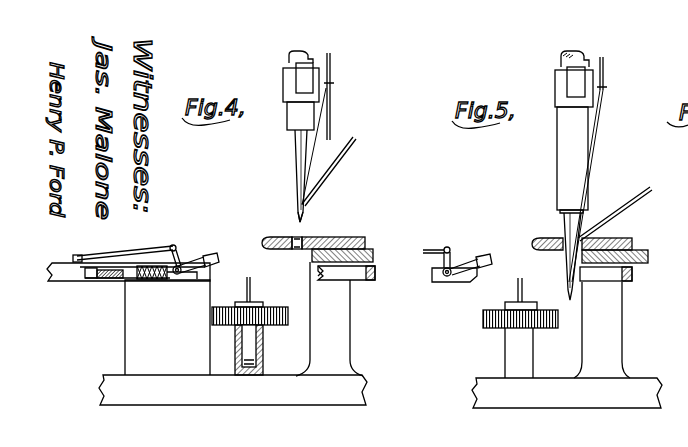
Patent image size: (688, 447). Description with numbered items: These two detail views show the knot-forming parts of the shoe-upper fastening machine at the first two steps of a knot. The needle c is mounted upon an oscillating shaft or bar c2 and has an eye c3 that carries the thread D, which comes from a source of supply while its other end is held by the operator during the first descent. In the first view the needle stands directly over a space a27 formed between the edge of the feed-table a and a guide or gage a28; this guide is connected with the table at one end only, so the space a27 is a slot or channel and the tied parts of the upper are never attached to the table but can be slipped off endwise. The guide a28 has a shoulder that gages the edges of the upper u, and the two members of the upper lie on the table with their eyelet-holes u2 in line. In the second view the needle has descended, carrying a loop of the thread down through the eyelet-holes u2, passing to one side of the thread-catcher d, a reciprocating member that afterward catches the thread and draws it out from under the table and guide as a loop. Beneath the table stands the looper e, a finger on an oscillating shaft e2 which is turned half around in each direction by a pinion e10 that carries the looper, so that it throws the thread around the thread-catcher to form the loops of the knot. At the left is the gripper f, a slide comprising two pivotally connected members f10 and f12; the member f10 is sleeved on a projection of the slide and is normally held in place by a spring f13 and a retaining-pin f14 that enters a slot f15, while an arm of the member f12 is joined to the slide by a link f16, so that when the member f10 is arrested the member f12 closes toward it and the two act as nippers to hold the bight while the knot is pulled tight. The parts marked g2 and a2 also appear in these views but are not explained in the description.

In FIG. 4, the oscillating shaft or bar c2 is at (288, 61).
In FIG. 5, the oscillating shaft or bar c2 is at (567, 145).
In FIG. 4, the needle bar clamp g2 is at (283, 100).
In FIG. 5, the needle bar clamp g2 is at (593, 98).
In FIG. 4, the needle c is at (297, 165).
In FIG. 5, the needle c is at (566, 259).
In FIG. 4, the eye c3 is at (299, 208).
In FIG. 4, the thread D is at (321, 127).
In FIG. 5, the thread D is at (588, 169).
In FIG. 4, the eyelet-holes u2 is at (313, 231).
In FIG. 5, the eyelet-holes u2 is at (615, 214).
In FIG. 4, the upper u is at (357, 237).
In FIG. 5, the upper u is at (620, 240).
In FIG. 4, the feed-table a is at (371, 253).
In FIG. 5, the feed-table a is at (649, 256).
In FIG. 4, the guide or gage a28 is at (266, 242).
In FIG. 5, the guide or gage a28 is at (543, 243).
In FIG. 4, the space a27 is at (295, 244).
In FIG. 4, the bed notch a2 is at (323, 273).
In FIG. 4, the looper e is at (247, 290).
In FIG. 5, the looper e is at (518, 292).
In FIG. 4, the pinion e10 is at (213, 318).
In FIG. 5, the pinion e10 is at (485, 329).
In FIG. 4, the oscillating shaft e2 is at (257, 344).
In FIG. 4, the gripper f is at (121, 290).
In FIG. 4, the link f16 is at (151, 247).
In FIG. 4, the gripper member f12 is at (188, 258).
In FIG. 5, the gripper member f12 is at (466, 255).
In FIG. 4, the slot f15 is at (96, 283).
In FIG. 4, the retaining-pin f14 is at (118, 283).
In FIG. 4, the spring f13 is at (148, 281).
In FIG. 4, the gripper member f10 is at (193, 281).
In FIG. 5, the gripper member f10 is at (460, 283).
In FIG. 5, the thread-catcher d is at (605, 278).